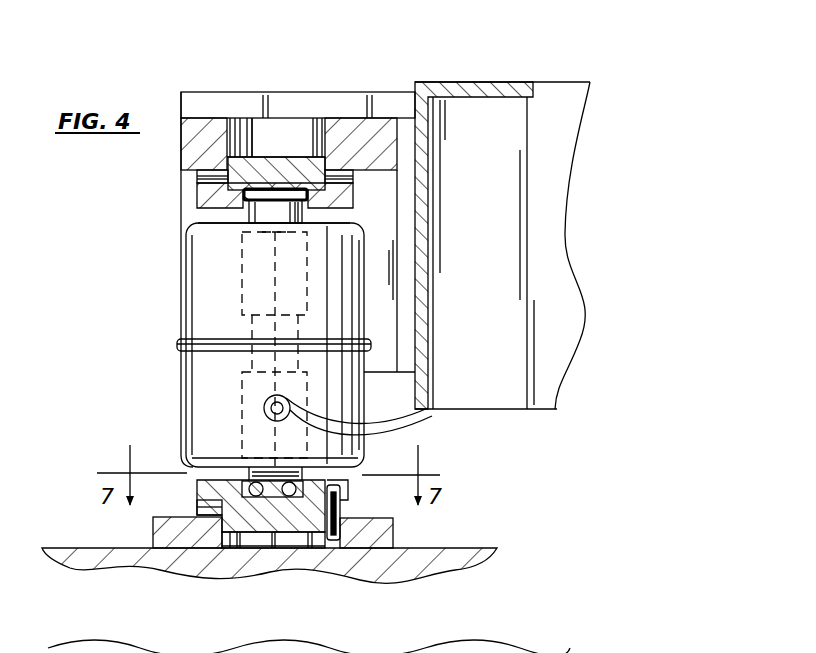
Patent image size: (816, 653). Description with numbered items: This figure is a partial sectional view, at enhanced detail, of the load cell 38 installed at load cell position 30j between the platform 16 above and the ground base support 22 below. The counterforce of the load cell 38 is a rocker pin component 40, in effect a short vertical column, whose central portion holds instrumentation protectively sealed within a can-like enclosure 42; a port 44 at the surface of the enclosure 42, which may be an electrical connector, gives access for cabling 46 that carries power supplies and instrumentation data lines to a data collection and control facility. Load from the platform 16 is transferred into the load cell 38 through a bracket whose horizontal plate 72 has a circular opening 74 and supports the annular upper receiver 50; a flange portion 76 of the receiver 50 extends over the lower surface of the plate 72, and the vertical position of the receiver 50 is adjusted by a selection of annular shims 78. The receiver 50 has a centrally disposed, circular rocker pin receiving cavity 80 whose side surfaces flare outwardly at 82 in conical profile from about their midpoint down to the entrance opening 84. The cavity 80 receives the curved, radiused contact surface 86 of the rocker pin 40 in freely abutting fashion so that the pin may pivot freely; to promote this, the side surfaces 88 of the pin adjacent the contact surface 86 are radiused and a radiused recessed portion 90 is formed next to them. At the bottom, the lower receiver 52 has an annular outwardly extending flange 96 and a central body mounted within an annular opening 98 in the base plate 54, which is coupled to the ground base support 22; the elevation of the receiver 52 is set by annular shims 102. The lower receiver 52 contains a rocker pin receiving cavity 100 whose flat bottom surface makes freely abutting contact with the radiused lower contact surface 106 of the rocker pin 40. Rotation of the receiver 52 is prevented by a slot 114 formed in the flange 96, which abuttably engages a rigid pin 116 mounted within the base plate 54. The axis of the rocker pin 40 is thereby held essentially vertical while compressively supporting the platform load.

The platform 16 is at (553, 174).
The ground base support 22 is at (463, 548).
The load cell position 30j is at (406, 80).
The load cell 38 is at (162, 265).
The rocker pin component 40 is at (190, 240).
The can-like enclosure 42 is at (205, 298).
The port 44 is at (266, 402).
The cabling 46 is at (196, 89).
The upper receiver 50 is at (308, 172).
The lower receiver 52 is at (308, 548).
The base plate 54 is at (390, 530).
The horizontal plate 72 is at (204, 130).
The circular opening 74 is at (258, 130).
The flange portion 76 is at (197, 195).
The annular shims 78 is at (197, 176).
The rocker pin receiving cavity 80 is at (265, 187).
The flare 82 is at (318, 196).
The entrance opening 84 is at (302, 211).
The contact surface 86 is at (283, 192).
The side surfaces 88 is at (246, 197).
The radiused recessed portion 90 is at (263, 232).
The annular flange 96 is at (201, 490).
The annular opening 98 is at (246, 548).
The rocker pin receiving cavity 100 is at (320, 478).
The annular shims 102 is at (197, 507).
The lower contact surface 106 is at (278, 548).
The slot 114 is at (350, 487).
The rigid pin 116 is at (345, 505).